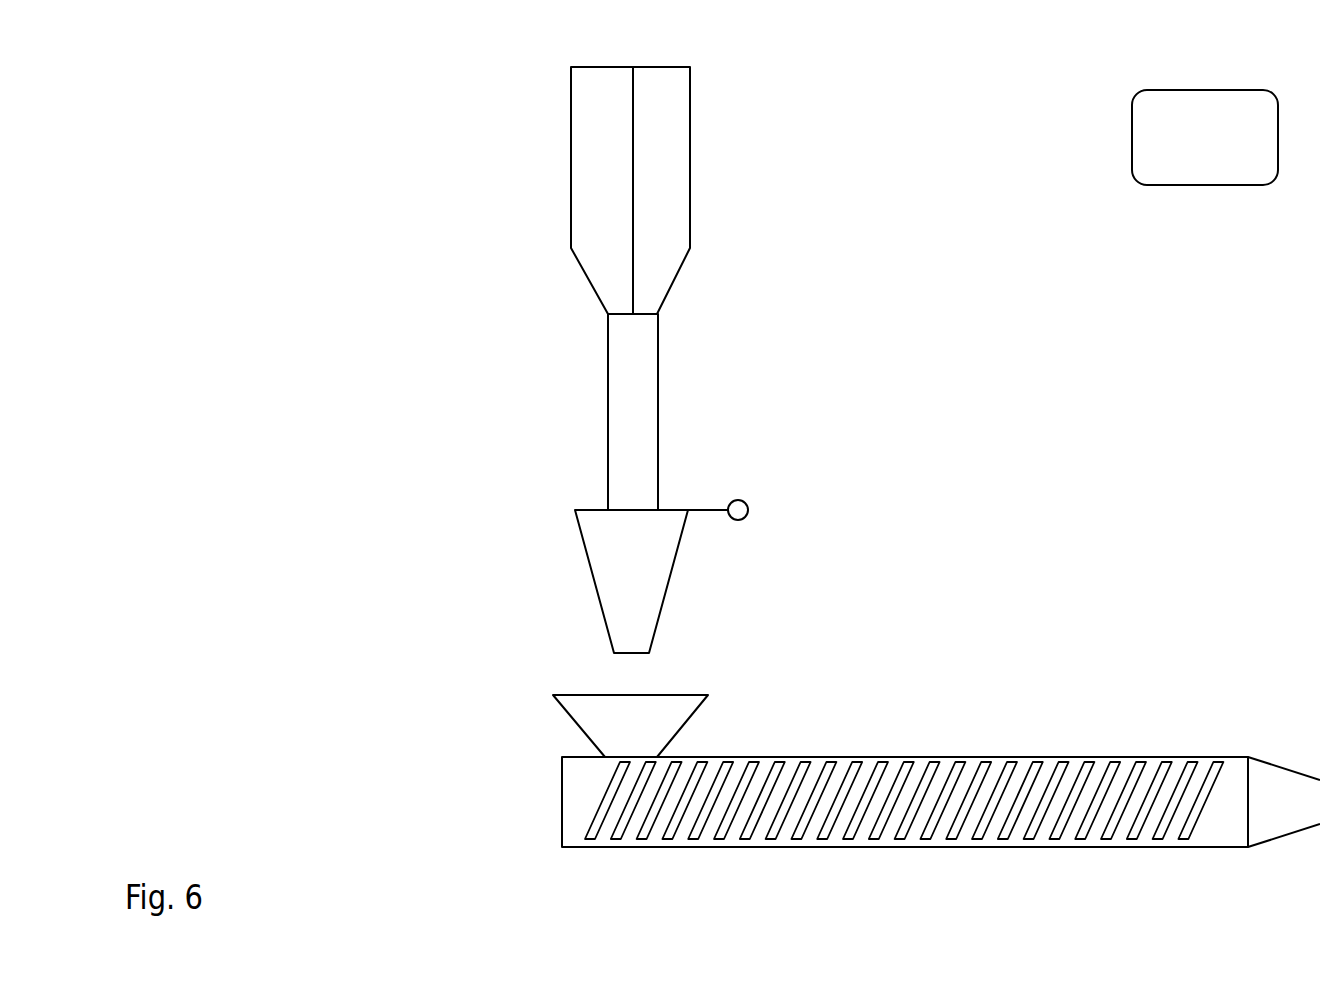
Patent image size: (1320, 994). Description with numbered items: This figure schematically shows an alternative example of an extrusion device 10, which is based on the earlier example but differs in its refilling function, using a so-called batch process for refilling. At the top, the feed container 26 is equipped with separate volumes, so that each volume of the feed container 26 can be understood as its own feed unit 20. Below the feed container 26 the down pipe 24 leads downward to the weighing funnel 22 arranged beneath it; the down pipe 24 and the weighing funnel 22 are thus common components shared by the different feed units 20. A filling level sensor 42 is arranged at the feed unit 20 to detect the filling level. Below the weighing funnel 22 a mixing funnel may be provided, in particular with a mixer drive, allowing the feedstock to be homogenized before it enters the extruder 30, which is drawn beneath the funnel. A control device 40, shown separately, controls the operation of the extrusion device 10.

The extrusion device 10 is at (446, 104).
The feed unit 20 is at (746, 190).
The feed container 26 is at (690, 88).
The down pipe 24 is at (658, 357).
The weighing funnel 22 is at (655, 633).
The filling level sensor 42 is at (743, 500).
The extruder 30 is at (1152, 757).
The control device 40 is at (1192, 90).